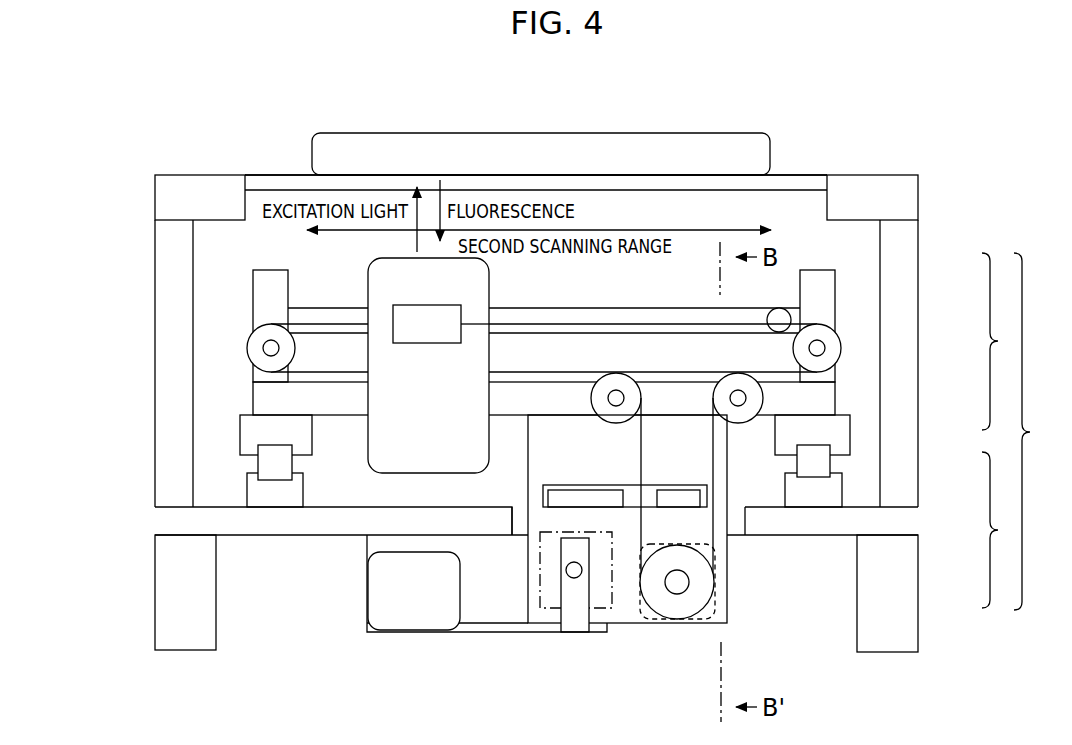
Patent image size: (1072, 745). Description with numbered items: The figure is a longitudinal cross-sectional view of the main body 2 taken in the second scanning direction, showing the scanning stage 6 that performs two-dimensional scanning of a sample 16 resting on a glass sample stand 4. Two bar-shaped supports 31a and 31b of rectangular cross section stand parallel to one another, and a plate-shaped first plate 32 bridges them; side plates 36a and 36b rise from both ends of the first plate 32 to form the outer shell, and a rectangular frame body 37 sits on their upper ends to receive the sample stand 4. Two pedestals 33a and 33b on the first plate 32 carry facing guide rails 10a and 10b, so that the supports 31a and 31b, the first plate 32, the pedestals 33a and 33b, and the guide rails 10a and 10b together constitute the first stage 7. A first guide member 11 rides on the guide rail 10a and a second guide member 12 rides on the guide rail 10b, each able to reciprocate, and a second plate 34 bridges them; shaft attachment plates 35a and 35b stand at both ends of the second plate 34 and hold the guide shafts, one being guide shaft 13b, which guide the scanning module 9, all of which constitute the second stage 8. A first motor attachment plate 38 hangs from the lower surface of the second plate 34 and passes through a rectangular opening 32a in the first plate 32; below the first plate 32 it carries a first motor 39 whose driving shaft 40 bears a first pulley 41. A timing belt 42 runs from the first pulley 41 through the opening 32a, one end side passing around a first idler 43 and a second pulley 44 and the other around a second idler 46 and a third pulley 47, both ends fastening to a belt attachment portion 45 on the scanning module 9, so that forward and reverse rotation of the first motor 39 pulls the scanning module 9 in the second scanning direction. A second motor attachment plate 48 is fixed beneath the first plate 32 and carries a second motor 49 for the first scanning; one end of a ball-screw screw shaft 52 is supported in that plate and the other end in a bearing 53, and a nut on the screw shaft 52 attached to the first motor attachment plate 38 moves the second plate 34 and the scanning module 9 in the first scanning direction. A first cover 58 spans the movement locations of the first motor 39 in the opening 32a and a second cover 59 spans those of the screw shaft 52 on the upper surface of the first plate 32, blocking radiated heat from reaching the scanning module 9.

The main body 2 is at (104, 320).
The sample stand 4 is at (797, 175).
The scanning stage 6 is at (1030, 431).
The first stage 7 is at (998, 530).
The second stage 8 is at (998, 341).
The scanning module 9 is at (489, 290).
The guide rail 10a is at (258, 464).
The guide rail 10b is at (830, 462).
The first guide member 11 is at (240, 428).
The second guide member 12 is at (850, 425).
The guide shaft 13b is at (765, 312).
The sample 16 is at (566, 133).
The support 31a is at (155, 597).
The support 31b is at (918, 588).
The first plate 32 is at (918, 518).
The opening 32a is at (511, 513).
The pedestal 33a is at (268, 508).
The pedestal 33b is at (842, 488).
The second plate 34 is at (835, 395).
The shaft attachment plate 35a is at (253, 288).
The shaft attachment plate 35b is at (835, 272).
The side plate 36a is at (155, 254).
The side plate 36b is at (918, 231).
The frame body 37 is at (195, 175).
The first motor attachment plate 38 is at (727, 554).
The first motor 39 is at (718, 602).
The driving shaft 40 is at (678, 586).
The first pulley 41 is at (706, 584).
The timing belt 42 is at (641, 449).
The first idler 43 is at (620, 376).
The second pulley 44 is at (247, 348).
The belt attachment portion 45 is at (418, 305).
The second idler 46 is at (734, 376).
The third pulley 47 is at (832, 340).
The second motor attachment plate 48 is at (495, 632).
The second motor 49 is at (400, 618).
The screw shaft 52 is at (566, 570).
The bearing 53 is at (540, 590).
The first cover 58 is at (676, 490).
The second cover 59 is at (569, 490).